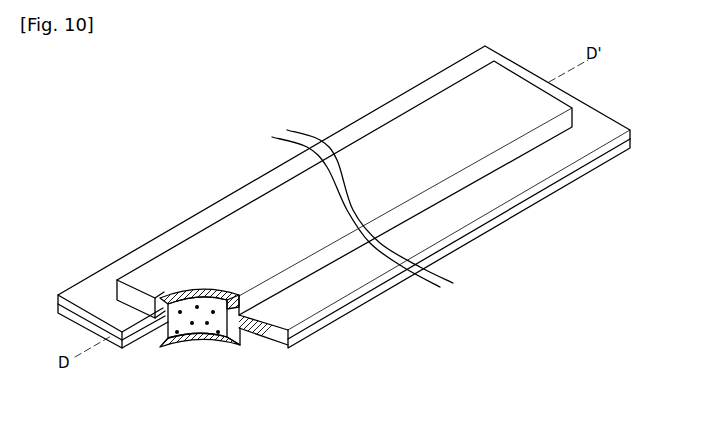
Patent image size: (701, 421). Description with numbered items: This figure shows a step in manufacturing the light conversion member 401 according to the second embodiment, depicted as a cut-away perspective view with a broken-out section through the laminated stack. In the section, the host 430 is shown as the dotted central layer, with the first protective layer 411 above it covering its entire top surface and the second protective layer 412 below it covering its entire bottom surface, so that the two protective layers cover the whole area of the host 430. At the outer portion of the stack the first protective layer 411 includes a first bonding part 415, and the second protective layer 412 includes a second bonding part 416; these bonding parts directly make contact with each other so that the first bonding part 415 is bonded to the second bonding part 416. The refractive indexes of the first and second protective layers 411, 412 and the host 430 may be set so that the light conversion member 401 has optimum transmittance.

The light conversion member 401 is at (364, 104).
The first protective layer 411 is at (176, 292).
The second protective layer 412 is at (238, 347).
The first bonding part 415 is at (100, 272).
The second bonding part 416 is at (75, 326).
The host 430 is at (200, 349).